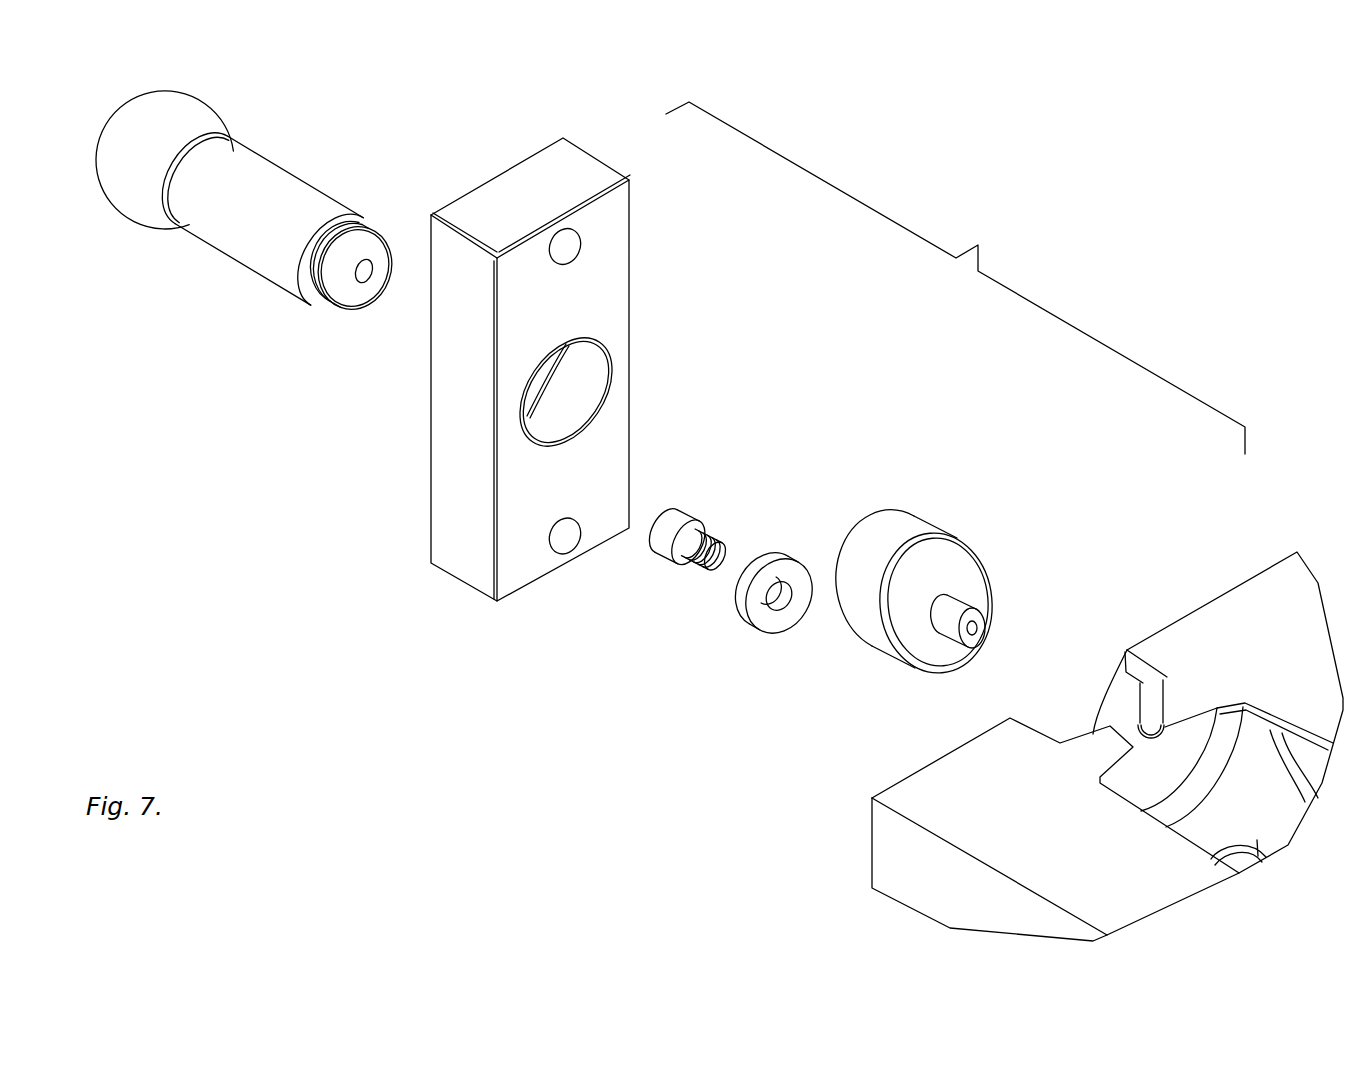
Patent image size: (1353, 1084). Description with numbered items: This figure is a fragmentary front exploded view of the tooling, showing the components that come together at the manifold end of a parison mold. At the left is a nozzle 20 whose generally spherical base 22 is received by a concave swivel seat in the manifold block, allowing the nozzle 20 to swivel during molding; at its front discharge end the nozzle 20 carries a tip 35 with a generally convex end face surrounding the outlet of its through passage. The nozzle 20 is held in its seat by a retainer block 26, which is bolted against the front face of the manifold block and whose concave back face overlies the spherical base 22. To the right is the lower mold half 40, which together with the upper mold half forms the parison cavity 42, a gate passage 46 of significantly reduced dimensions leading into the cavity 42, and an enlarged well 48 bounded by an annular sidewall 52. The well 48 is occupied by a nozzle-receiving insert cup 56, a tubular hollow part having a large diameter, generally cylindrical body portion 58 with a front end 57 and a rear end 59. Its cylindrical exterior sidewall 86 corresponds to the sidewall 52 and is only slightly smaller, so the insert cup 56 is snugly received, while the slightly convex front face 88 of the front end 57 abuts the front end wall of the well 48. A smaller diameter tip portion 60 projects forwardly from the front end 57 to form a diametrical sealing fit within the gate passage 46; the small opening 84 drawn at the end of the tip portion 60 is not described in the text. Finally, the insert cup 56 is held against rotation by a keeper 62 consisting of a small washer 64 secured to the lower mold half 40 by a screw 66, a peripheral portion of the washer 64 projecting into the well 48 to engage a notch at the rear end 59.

The nozzle 20 is at (249, 220).
The spherical base 22 is at (193, 113).
The tip 35 is at (342, 300).
The retainer block 26 is at (605, 283).
The keeper 62 is at (707, 598).
The washer 64 is at (790, 568).
The screw 66 is at (663, 543).
The insert cup 56 is at (939, 580).
The front end 57 is at (945, 653).
The body portion 58 is at (932, 505).
The rear end 59 is at (875, 528).
The tip portion 60 is at (999, 609).
The bore 84 is at (1009, 635).
The exterior sidewall 86 is at (872, 552).
The front face 88 is at (910, 657).
The lower mold half 40 is at (1107, 740).
The parison cavity 42 is at (1255, 758).
The gate passage 46 is at (1145, 735).
The well 48 is at (1095, 689).
The sidewall 52 is at (1140, 685).